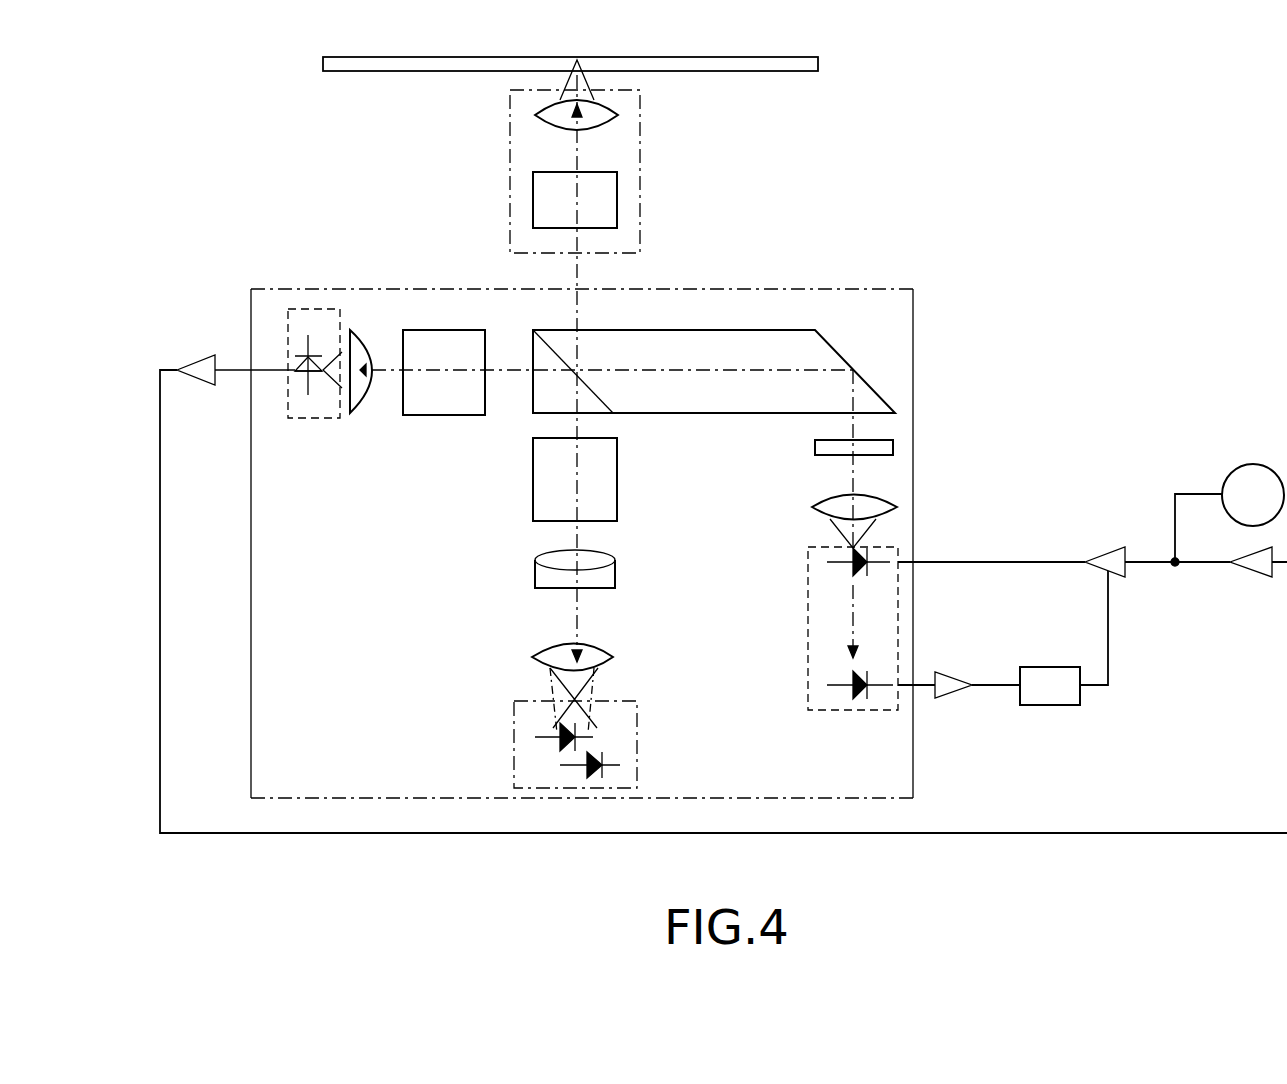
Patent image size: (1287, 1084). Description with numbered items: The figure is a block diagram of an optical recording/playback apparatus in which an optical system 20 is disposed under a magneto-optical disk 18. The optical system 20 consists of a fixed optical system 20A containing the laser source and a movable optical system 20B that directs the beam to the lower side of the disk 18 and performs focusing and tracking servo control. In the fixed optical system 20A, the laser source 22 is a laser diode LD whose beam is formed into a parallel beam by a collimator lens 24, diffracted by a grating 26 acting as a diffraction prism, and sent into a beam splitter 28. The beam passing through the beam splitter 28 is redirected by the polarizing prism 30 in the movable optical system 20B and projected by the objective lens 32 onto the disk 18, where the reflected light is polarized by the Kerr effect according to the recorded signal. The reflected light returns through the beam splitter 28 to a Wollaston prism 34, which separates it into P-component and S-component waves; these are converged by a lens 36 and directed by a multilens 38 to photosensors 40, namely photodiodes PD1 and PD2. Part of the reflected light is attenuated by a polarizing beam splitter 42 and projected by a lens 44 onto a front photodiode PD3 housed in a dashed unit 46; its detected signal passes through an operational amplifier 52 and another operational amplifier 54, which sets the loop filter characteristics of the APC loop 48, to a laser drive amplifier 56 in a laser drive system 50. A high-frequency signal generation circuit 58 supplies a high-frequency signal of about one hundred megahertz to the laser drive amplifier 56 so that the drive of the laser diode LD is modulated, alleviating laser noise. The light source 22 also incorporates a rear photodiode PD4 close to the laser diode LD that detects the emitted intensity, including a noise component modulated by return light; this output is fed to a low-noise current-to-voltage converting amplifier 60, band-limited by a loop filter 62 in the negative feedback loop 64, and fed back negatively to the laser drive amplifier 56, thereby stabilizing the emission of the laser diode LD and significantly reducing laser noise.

The magneto-optical disk 18 is at (775, 71).
The optical system 20 is at (653, 444).
The fixed optical system 20A is at (922, 336).
The movable optical system 20B is at (506, 203).
The laser source 22 is at (807, 651).
The collimator lens 24 is at (812, 504).
The grating 26 is at (815, 447).
The beam splitter 28 is at (716, 330).
The polarizing prism 30 is at (617, 200).
The objective lens 32 is at (600, 118).
The Wollaston prism 34 is at (533, 495).
The lens 36 is at (533, 574).
The multilens 38 is at (545, 651).
The photosensors 40 is at (578, 746).
The polarizing beam splitter 42 is at (440, 415).
The lens 44 is at (362, 413).
The photodetector unit 46 is at (293, 371).
The APC loop 48 is at (1040, 842).
The laser drive system 50 is at (1092, 568).
The operational amplifier 52 is at (195, 387).
The operational amplifier 54 is at (1242, 578).
The laser drive amplifier 56 is at (1115, 547).
The high-frequency signal generation circuit 58 is at (1258, 464).
The current-to-voltage converting amplifier 60 is at (950, 700).
The loop filter 62 is at (1045, 706).
The negative feedback loop 64 is at (1003, 672).
The photodiode PD1 is at (598, 735).
The photodiode PD2 is at (612, 775).
The front photodiode PD3 is at (310, 335).
The rear photodiode PD4 is at (850, 692).
The laser diode LD is at (827, 567).